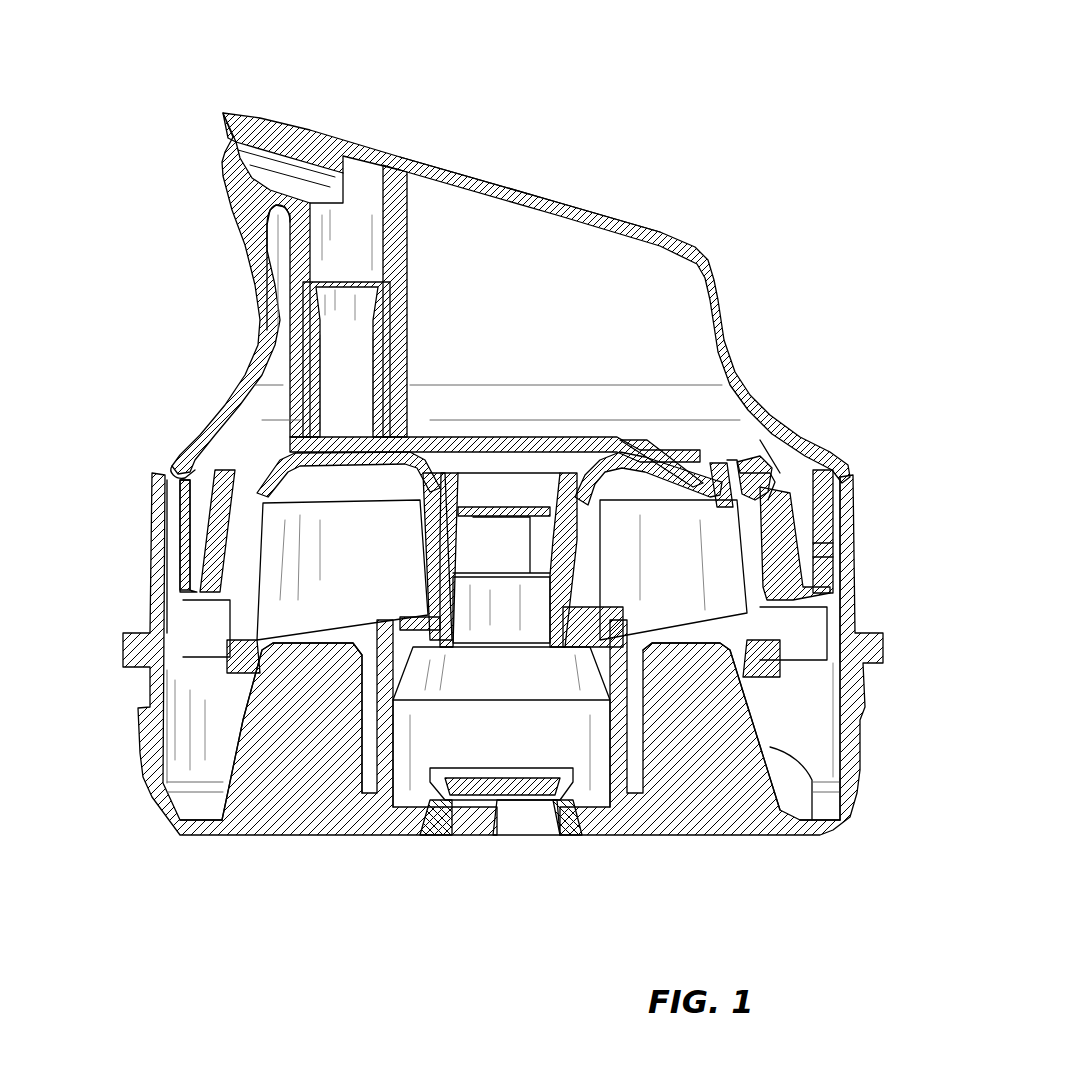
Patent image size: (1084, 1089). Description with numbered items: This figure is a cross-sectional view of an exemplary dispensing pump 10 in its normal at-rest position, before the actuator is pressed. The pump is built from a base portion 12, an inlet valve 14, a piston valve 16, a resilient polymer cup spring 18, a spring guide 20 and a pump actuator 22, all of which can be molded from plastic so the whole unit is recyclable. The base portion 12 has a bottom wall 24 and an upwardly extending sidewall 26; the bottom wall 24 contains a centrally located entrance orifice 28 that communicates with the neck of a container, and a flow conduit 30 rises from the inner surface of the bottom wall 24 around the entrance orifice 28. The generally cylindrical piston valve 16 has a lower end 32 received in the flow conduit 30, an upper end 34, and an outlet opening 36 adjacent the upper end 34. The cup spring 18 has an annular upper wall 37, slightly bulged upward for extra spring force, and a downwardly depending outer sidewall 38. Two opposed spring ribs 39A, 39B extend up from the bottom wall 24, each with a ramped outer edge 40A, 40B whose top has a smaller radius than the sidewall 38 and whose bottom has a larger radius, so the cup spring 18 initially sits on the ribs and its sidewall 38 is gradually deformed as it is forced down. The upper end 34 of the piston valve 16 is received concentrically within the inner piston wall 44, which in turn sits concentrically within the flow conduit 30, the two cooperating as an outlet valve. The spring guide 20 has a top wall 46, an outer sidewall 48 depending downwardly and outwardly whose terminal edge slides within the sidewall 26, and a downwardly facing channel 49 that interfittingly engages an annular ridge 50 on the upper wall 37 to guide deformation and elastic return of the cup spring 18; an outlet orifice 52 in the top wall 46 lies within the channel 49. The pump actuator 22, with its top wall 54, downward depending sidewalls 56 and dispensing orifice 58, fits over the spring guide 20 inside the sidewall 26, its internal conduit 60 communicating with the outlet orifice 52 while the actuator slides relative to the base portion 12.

The dispensing pump 10 is at (710, 106).
The base portion 12 is at (146, 786).
The inlet valve 14 is at (481, 790).
The piston valve 16 is at (548, 500).
The resilient polymer cup spring 18 is at (758, 534).
The spring guide 20 is at (217, 498).
The pump actuator 22 is at (588, 222).
The bottom wall 24 is at (238, 830).
The sidewall 26 is at (848, 680).
The entrance orifice 28 is at (568, 822).
The flow conduit 30 is at (462, 742).
The lower end 32 is at (592, 662).
The upper end 34 is at (565, 476).
The outlet opening 36 is at (483, 506).
The annular upper wall 37 is at (683, 462).
The outer sidewall 38 is at (755, 590).
The spring rib 39A is at (282, 797).
The spring rib 39B is at (695, 790).
The ramped outer edge 40A is at (242, 727).
The ramped outer edge 40B is at (810, 790).
The inner piston wall 44 is at (460, 530).
The top wall 46 is at (523, 506).
The outer sidewall 48 is at (213, 550).
The downwardly facing channel 49 is at (240, 456).
The annular ridge 50 is at (730, 467).
The outlet orifice 52 is at (377, 376).
The top wall 54 is at (540, 206).
The sidewalls 56 is at (175, 460).
The dispensing orifice 58 is at (265, 152).
The internal conduit 60 is at (296, 250).